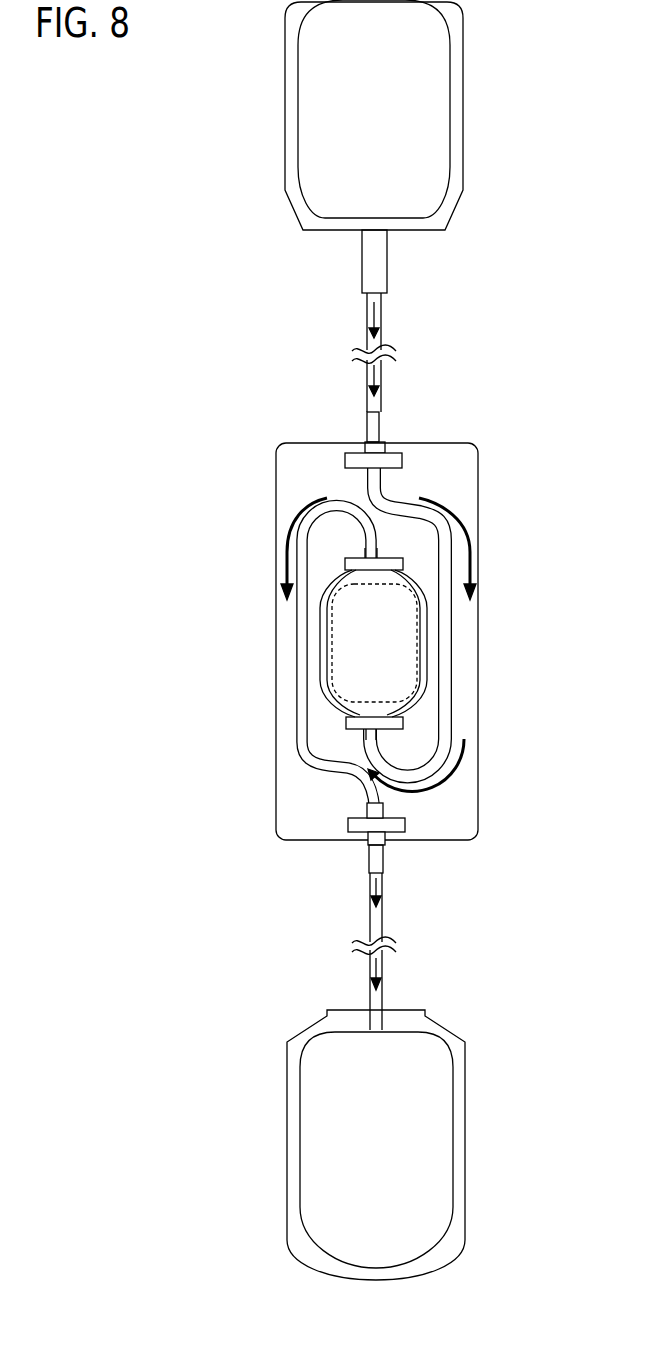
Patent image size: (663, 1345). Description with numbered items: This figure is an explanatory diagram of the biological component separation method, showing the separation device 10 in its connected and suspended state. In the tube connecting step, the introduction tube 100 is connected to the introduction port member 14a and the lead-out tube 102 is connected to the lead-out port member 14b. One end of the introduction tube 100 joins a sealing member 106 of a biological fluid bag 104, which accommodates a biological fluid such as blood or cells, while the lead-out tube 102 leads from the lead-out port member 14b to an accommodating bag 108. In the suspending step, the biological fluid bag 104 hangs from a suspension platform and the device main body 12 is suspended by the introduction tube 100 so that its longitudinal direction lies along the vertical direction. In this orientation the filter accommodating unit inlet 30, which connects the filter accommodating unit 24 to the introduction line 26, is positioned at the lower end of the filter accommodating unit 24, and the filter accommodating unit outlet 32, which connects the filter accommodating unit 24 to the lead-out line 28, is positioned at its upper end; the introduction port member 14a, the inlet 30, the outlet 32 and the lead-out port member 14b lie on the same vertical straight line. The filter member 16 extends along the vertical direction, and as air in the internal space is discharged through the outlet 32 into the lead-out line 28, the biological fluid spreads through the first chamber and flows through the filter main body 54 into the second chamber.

The biological component separation device 10 is at (363, 613).
The device main body 12 is at (486, 488).
The introduction port member 14a is at (372, 421).
The lead-out port member 14b is at (383, 864).
The filter member 16 is at (355, 652).
The filter accommodating unit 24 is at (350, 643).
The introduction line 26 is at (458, 672).
The lead-out line 28 is at (303, 712).
The filter accommodating unit inlet 30 is at (380, 735).
The filter accommodating unit outlet 32 is at (380, 551).
The filter main body 54 is at (293, 643).
The introduction tube 100 is at (383, 384).
The lead-out tube 102 is at (370, 924).
The biological fluid bag 104 is at (464, 120).
The sealing member 106 is at (388, 266).
The accommodating bag 108 is at (465, 1130).